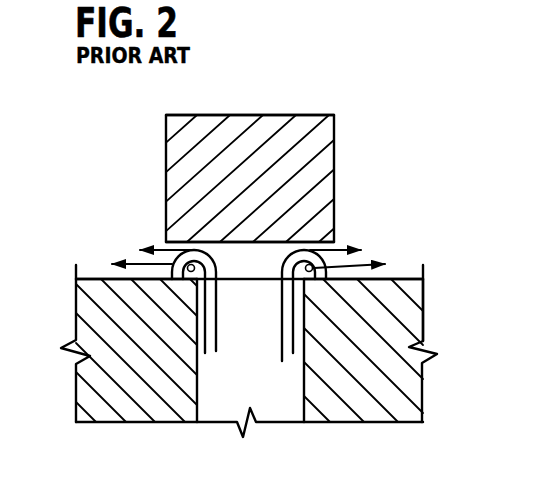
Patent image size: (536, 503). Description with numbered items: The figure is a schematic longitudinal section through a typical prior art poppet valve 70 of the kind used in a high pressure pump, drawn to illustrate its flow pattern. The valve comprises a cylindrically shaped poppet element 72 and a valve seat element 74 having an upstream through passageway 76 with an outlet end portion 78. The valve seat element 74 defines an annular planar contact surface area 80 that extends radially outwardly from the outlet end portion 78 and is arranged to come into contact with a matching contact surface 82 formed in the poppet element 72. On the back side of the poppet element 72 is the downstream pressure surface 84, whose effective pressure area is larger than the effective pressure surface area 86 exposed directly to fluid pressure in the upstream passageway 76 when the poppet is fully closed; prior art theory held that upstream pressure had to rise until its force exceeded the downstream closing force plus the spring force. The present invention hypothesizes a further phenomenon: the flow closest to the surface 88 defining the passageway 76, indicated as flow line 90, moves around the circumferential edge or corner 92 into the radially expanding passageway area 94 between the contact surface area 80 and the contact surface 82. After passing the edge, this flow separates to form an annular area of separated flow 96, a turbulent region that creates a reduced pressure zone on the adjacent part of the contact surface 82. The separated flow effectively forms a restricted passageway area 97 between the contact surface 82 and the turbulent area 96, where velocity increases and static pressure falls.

The prior art poppet valve 70 is at (343, 103).
The poppet element 72 is at (320, 145).
The valve seat element 74 is at (393, 287).
The upstream through passageway 76 is at (258, 398).
The outlet end portion 78 is at (424, 321).
The annular planar contact surface area 80 is at (393, 279).
The contact surface 82 is at (178, 275).
The downstream pressure surface 84 is at (220, 115).
The effective pressure surface area 86 is at (223, 246).
The surface defining the passageway 88 is at (304, 386).
The flow line 90 is at (293, 333).
The circumferential edge or corner 92 is at (210, 268).
The radially expanding passageway area 94 is at (340, 258).
The annular area of separated flow 96 is at (170, 277).
The restricted passageway area 97 is at (183, 249).